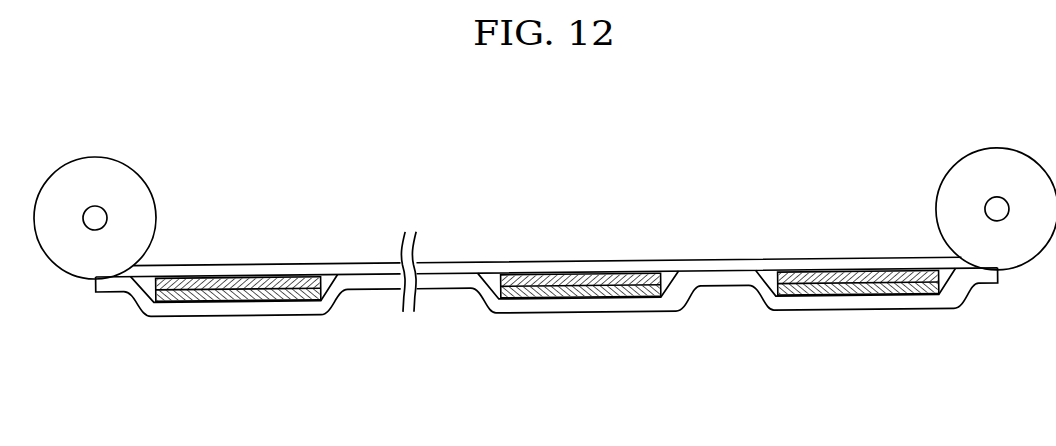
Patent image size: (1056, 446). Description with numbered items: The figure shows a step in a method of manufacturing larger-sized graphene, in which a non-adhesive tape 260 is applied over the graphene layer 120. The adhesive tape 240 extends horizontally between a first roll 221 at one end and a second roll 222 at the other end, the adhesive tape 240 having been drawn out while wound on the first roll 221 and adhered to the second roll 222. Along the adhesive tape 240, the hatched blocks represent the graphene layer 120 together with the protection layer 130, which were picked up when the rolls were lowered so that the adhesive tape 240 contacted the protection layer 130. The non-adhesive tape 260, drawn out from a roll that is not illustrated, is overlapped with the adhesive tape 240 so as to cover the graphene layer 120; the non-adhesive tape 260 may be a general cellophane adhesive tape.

The graphene layer 120 is at (818, 297).
The protection layer 130 is at (880, 295).
The first roll 221 is at (145, 192).
The second roll 222 is at (947, 185).
The adhesive tape 240 is at (642, 265).
The non-adhesive tape 260 is at (980, 284).